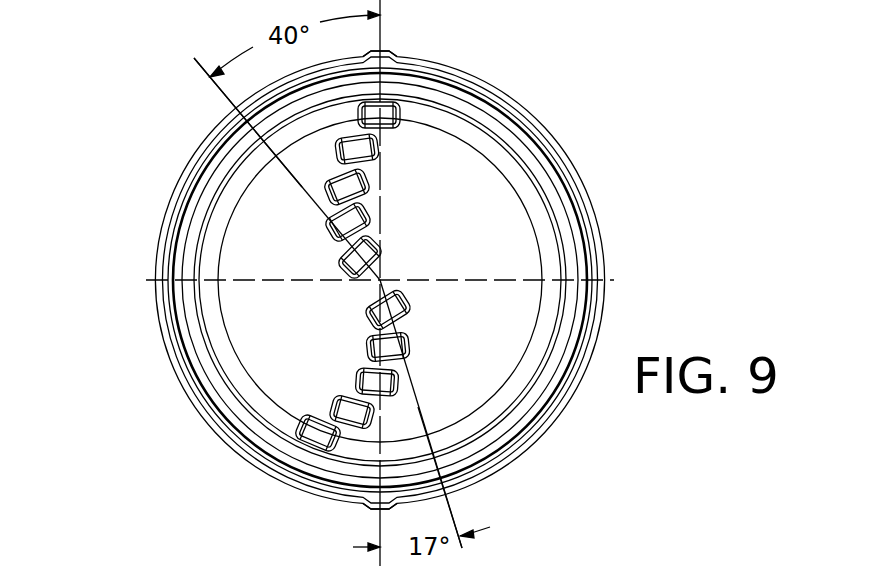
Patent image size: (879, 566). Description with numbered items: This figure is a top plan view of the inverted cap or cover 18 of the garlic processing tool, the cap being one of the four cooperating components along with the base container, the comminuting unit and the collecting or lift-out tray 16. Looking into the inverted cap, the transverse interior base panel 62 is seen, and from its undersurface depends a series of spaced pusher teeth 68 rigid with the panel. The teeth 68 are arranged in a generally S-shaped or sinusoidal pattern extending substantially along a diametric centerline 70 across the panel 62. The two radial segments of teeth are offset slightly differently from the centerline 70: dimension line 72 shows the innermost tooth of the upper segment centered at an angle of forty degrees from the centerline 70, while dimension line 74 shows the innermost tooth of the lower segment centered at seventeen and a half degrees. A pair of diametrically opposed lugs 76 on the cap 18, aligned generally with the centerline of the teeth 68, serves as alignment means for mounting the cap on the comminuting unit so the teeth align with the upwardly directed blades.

The collecting or lift-out tray 16 is at (578, 565).
The cap or cover 18 is at (157, 230).
The interior base panel 62 is at (305, 337).
The pusher teeth 68 is at (385, 222).
The diametric centerline 70 is at (380, 178).
The dimension line 72 is at (214, 92).
The dimension line 74 is at (455, 512).
The lugs 76 is at (393, 57).